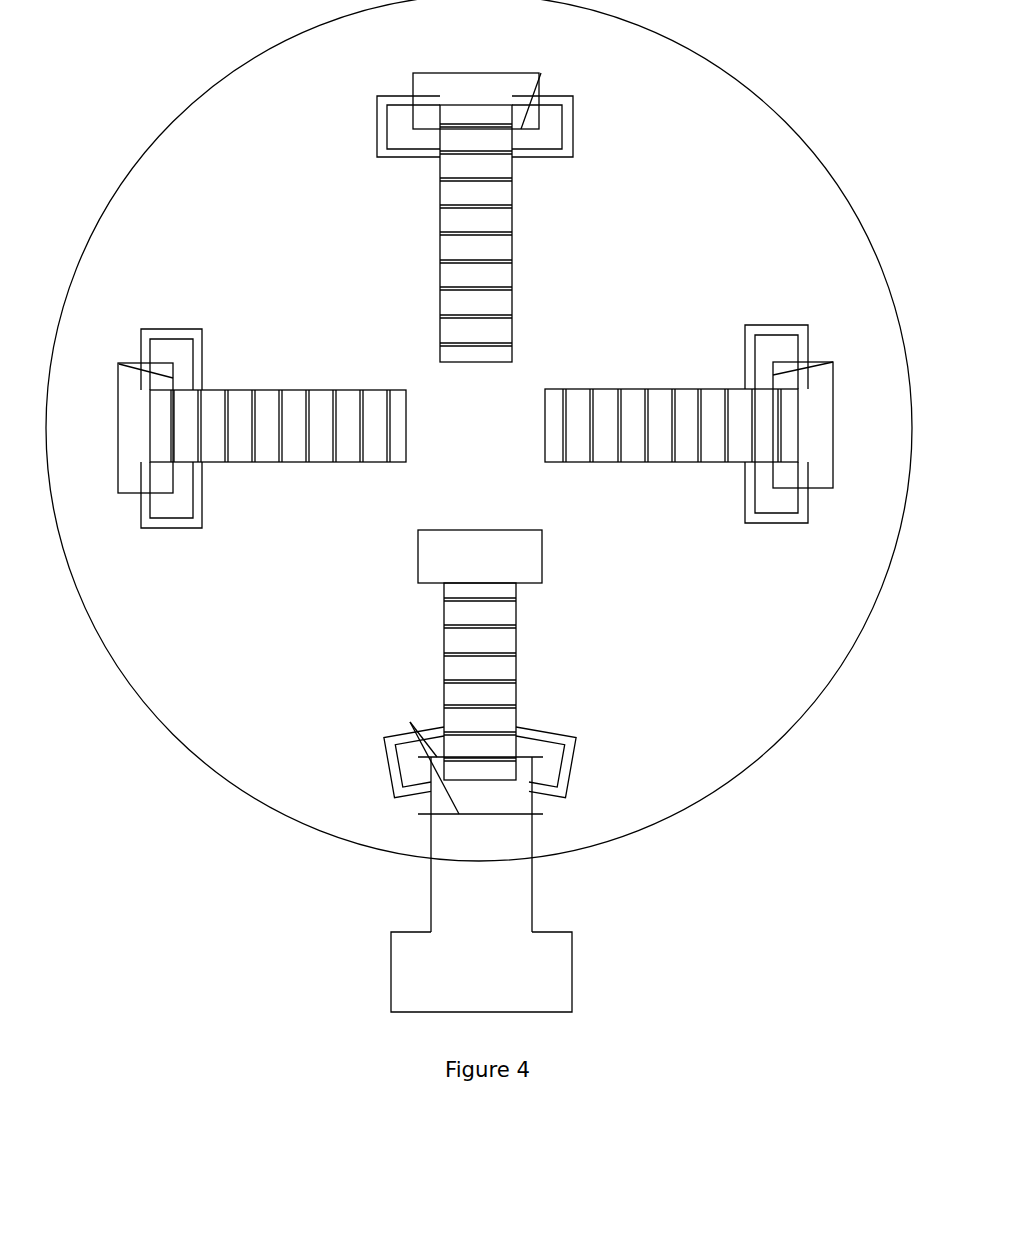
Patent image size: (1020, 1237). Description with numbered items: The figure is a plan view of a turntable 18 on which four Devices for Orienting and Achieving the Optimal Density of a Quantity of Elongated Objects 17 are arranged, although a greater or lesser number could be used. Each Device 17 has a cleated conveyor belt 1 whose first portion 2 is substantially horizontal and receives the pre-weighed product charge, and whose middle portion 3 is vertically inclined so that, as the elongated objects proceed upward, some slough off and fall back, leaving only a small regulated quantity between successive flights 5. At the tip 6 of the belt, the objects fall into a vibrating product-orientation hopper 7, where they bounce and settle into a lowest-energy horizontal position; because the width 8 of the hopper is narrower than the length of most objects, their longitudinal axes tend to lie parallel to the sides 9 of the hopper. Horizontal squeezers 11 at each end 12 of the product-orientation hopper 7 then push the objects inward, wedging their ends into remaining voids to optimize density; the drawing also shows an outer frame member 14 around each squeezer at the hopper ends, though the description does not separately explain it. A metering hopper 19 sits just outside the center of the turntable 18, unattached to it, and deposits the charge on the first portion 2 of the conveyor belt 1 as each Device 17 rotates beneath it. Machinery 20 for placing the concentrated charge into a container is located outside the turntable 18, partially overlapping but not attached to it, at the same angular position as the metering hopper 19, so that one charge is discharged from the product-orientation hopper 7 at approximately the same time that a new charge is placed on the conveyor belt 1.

The cleated conveyor belt 1 is at (513, 228).
The first portion 2 is at (490, 337).
The middle portion 3 is at (672, 415).
The flight 5 is at (445, 207).
The tip 6 is at (474, 104).
The product-orientation hopper 7 is at (498, 82).
The width 8 is at (413, 87).
The sides 9 is at (543, 98).
The horizontal squeezer 11 is at (378, 168).
The end 12 is at (412, 113).
The outer frame member 14 is at (382, 139).
The Device for Orienting and Achieving the Optimal Density of a Quantity of Elongate 17 is at (423, 275).
The turntable 18 is at (757, 730).
The metering hopper 19 is at (480, 550).
The machinery 20 is at (462, 899).